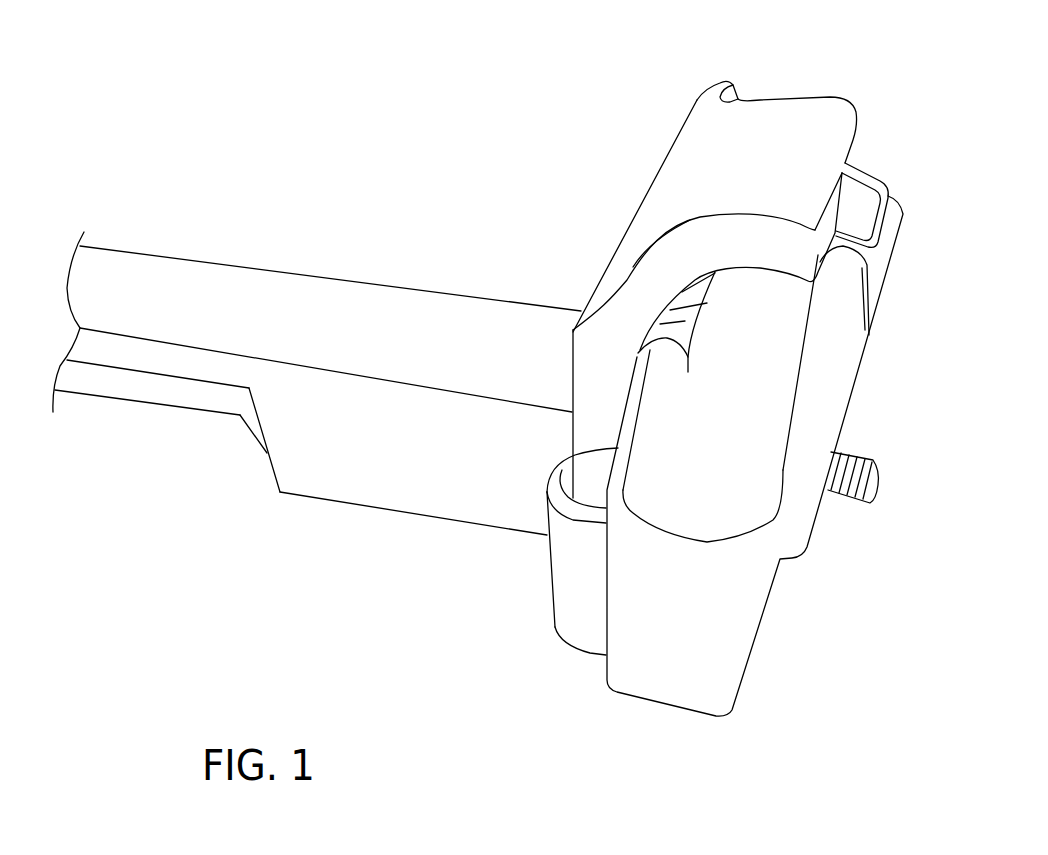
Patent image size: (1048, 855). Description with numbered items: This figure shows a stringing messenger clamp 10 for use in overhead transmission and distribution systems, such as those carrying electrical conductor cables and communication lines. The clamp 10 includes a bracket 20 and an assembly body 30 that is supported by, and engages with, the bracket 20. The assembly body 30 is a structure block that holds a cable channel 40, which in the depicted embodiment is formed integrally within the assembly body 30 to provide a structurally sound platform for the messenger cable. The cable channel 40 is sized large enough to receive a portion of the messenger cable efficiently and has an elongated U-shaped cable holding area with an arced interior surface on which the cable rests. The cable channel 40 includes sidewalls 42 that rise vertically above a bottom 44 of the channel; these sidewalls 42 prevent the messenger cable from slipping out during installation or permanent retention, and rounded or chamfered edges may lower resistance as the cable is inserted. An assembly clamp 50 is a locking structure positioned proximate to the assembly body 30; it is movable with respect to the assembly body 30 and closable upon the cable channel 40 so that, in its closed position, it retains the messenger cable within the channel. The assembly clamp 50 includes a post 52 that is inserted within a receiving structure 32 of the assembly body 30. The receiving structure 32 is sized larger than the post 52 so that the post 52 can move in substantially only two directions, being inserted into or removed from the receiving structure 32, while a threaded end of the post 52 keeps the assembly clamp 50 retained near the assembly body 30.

The stringing messenger clamp 10 is at (940, 44).
The bracket 20 is at (355, 460).
The assembly body 30 is at (688, 677).
The receiving structure 32 is at (582, 593).
The cable channel 40 is at (677, 482).
The sidewalls 42 is at (828, 362).
The bottom 44 is at (733, 505).
The assembly clamp 50 is at (712, 163).
The post 52 is at (597, 395).